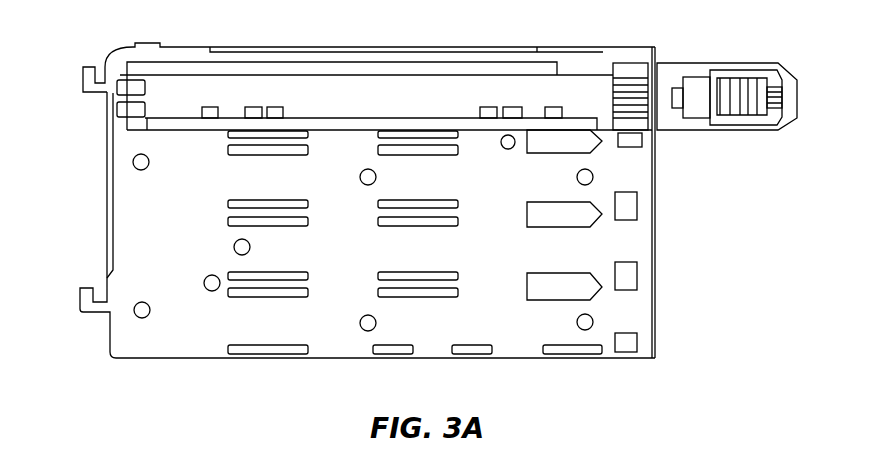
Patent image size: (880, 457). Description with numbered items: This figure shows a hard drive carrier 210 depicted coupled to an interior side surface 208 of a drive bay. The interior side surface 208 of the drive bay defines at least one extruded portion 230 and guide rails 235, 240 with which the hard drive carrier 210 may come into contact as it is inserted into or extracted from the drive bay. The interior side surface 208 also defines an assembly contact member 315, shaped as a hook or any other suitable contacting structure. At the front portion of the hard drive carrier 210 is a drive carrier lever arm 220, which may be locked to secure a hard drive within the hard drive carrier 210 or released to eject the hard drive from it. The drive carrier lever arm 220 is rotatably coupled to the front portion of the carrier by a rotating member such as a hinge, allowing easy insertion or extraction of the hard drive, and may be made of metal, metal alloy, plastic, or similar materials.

The interior side surface 208 is at (600, 327).
The hard drive carrier 210 is at (330, 46).
The drive carrier lever arm 220 is at (720, 63).
The extruded portion 230 is at (632, 340).
The guide rail 235 is at (577, 287).
The guide rail 240 is at (415, 153).
The assembly contact member 315 is at (88, 66).